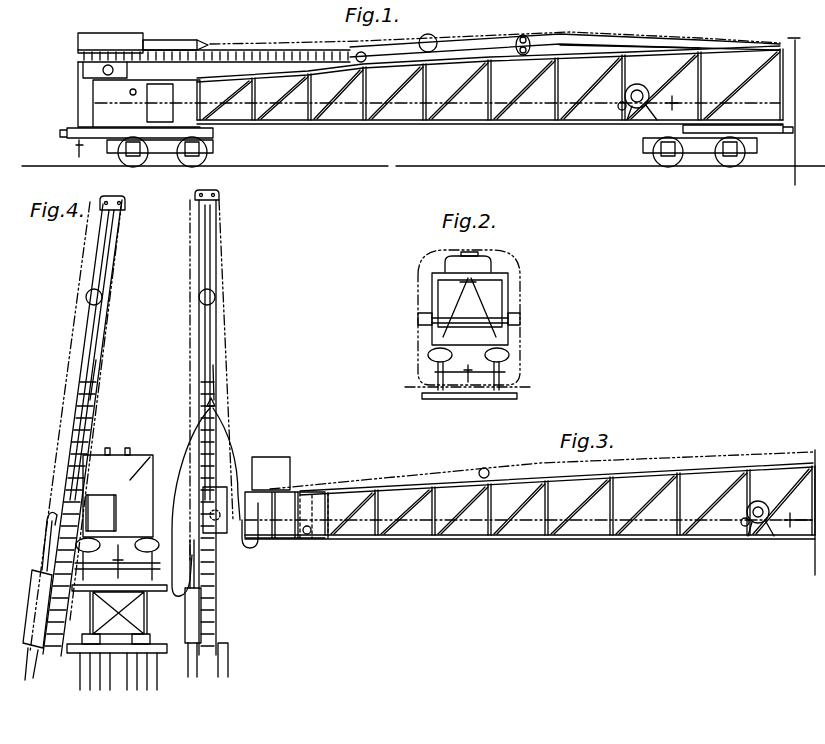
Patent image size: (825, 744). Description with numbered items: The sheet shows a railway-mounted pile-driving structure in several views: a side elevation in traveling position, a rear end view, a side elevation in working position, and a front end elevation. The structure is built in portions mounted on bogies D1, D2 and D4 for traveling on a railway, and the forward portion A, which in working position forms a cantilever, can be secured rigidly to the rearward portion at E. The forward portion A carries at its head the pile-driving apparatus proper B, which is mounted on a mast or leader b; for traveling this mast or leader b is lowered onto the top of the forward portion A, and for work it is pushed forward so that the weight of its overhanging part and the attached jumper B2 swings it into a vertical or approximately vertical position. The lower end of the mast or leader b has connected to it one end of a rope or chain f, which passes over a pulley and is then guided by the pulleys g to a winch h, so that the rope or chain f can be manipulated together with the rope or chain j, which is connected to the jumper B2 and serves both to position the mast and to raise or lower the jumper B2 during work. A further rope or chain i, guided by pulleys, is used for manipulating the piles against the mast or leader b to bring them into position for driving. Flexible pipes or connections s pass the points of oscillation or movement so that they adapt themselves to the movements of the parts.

In FIG. 1, the forward portion A is at (393, 124).
In FIG. 3, the forward portion A is at (507, 538).
In FIG. 1, the pile-driving apparatus proper B is at (429, 45).
In FIG. 4, the pile-driving apparatus proper B is at (131, 423).
In FIG. 1, the jumper B2 is at (110, 42).
In FIG. 4, the jumper B2 is at (190, 606).
In FIG. 1, the mast or leader b is at (384, 53).
In FIG. 4, the mast or leader b is at (103, 250).
In FIG. 1, the rope or chain j is at (230, 46).
In FIG. 3, the rope or chain j is at (372, 470).
In FIG. 4, the rope or chain j is at (118, 260).
In FIG. 1, the rope or chain i is at (578, 52).
In FIG. 4, the rope or chain i is at (100, 356).
In FIG. 1, the winch h is at (638, 92).
In FIG. 3, the winch h is at (761, 504).
In FIG. 1, the rope or chain f is at (350, 107).
In FIG. 3, the rope or chain f is at (415, 528).
In FIG. 3, the pulleys g is at (313, 522).
In FIG. 4, the flexible pipes or connections s is at (236, 449).
In FIG. 1, the securing point of portions E is at (794, 47).
In FIG. 1, the bogie D1 is at (173, 150).
In FIG. 1, the bogie D2 is at (704, 150).
In FIG. 2, the bogie D4 is at (505, 370).